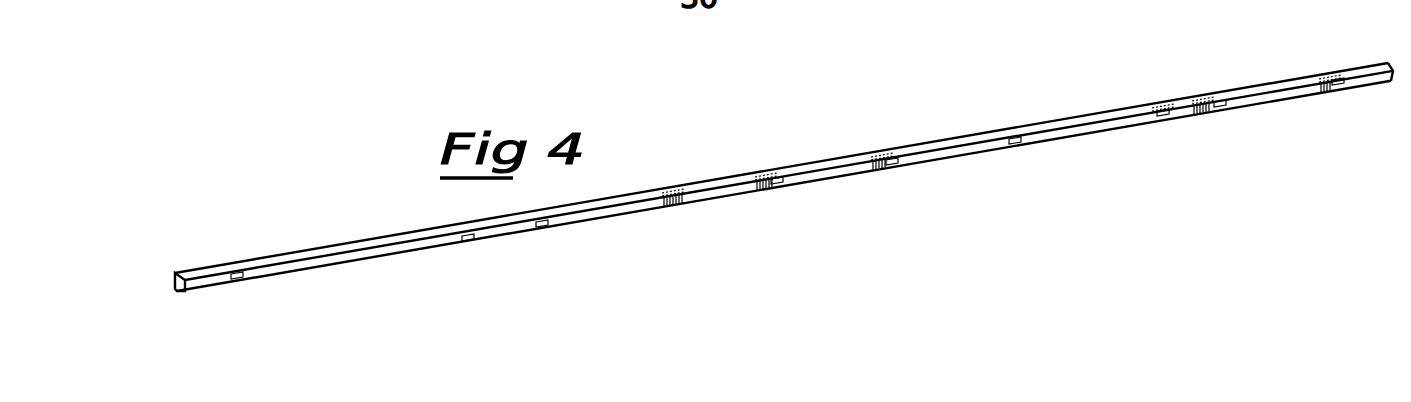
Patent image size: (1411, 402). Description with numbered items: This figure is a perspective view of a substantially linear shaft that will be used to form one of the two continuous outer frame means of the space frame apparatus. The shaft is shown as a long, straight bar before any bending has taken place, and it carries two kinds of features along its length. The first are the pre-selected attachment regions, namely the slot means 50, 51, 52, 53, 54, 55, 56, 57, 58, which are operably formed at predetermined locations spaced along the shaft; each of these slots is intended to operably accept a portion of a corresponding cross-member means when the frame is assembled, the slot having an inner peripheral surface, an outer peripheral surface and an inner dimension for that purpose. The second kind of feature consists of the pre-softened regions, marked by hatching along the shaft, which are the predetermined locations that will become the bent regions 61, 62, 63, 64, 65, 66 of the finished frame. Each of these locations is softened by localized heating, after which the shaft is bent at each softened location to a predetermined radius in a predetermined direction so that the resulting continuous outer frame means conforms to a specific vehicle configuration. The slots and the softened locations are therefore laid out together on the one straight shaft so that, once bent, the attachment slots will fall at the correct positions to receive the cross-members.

The slot means 50 is at (239, 280).
The slot means 51 is at (470, 242).
The slot means 52 is at (543, 228).
The slot means 53 is at (780, 185).
The slot means 54 is at (893, 166).
The slot means 55 is at (1016, 145).
The slot means 56 is at (1165, 117).
The slot means 57 is at (1222, 108).
The slot means 58 is at (1340, 86).
The bent region 61 is at (1330, 73).
The bent region 62 is at (1206, 97).
The bent region 63 is at (1163, 100).
The bent region 64 is at (888, 152).
The bent region 65 is at (771, 171).
The bent region 66 is at (677, 186).